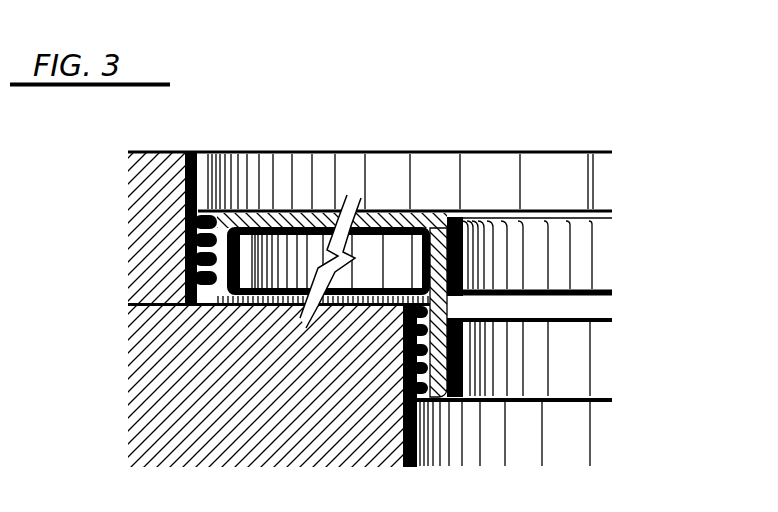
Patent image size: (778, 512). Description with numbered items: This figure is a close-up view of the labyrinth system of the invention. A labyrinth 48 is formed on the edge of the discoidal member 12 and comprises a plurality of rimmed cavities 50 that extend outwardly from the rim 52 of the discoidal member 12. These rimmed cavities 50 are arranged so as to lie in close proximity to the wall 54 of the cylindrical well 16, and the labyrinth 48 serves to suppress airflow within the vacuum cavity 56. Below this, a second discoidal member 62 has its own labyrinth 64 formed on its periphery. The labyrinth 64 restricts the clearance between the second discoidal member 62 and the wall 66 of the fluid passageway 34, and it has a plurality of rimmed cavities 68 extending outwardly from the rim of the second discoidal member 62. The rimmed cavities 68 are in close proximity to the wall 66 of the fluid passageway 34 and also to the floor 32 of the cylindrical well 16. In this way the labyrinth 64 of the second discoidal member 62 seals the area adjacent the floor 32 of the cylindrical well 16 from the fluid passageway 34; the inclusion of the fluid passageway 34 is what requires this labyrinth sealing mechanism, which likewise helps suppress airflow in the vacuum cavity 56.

The discoidal member 12 is at (563, 215).
The cylindrical well 16 is at (477, 163).
The floor 32 is at (230, 306).
The fluid passageway 34 is at (443, 433).
The labyrinth 48 is at (187, 243).
The rimmed cavities 50 is at (197, 306).
The rim 52 is at (307, 212).
The wall 54 is at (222, 152).
The vacuum cavity 56 is at (303, 268).
The second discoidal member 62 is at (573, 393).
The labyrinth 64 is at (398, 337).
The wall 66 is at (405, 397).
The rimmed cavities 68 is at (405, 355).